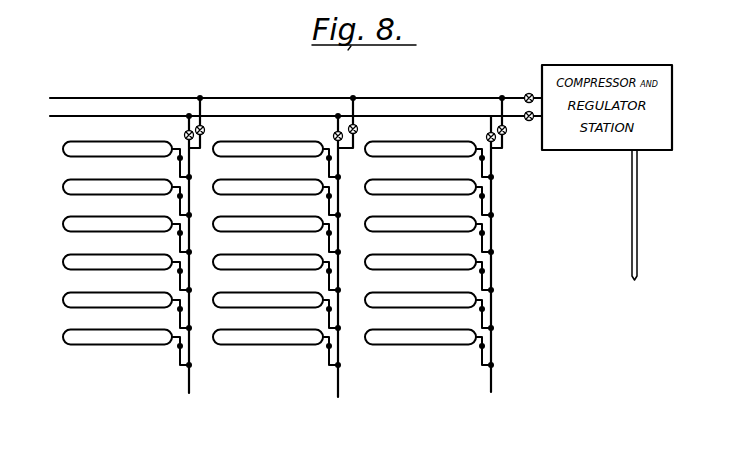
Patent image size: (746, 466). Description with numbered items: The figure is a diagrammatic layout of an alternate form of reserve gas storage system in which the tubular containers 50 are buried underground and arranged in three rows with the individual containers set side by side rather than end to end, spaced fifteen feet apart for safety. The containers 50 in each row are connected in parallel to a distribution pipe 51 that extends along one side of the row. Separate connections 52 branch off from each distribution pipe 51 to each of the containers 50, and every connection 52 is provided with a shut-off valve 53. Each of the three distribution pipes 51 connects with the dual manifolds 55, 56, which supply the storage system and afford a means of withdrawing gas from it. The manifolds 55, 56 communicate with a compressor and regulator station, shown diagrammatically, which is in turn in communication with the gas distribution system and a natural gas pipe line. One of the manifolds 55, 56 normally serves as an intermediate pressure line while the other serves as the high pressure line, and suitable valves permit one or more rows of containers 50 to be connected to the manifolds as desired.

The tubular container 50 is at (103, 157).
The distribution pipe 51 is at (192, 244).
The connection 52 is at (183, 213).
The shut-off valve 53 is at (182, 159).
The manifold 55 is at (458, 98).
The manifold 56 is at (408, 115).